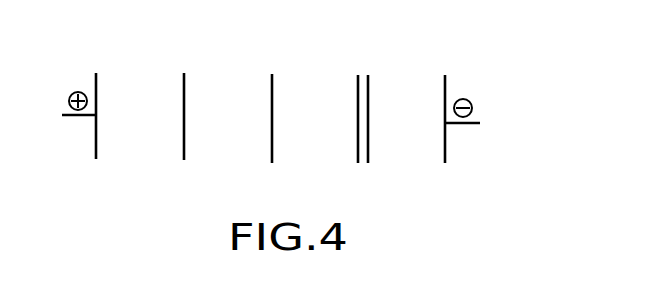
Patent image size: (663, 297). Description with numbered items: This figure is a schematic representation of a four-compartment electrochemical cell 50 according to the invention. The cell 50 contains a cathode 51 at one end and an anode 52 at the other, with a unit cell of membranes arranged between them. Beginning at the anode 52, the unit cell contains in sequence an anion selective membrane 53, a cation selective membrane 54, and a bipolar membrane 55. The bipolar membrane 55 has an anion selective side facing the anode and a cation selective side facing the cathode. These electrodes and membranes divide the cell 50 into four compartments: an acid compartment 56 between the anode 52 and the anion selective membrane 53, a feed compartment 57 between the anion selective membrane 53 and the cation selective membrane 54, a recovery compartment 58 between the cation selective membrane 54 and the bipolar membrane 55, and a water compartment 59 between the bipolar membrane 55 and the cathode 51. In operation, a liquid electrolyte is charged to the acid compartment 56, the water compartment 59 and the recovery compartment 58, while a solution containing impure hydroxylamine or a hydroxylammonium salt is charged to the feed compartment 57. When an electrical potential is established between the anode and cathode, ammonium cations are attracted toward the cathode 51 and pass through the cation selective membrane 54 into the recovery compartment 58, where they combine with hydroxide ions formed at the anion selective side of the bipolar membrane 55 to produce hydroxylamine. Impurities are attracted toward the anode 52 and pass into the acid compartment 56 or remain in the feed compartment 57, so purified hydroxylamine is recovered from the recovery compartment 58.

The electrochemical cell 50 is at (271, 103).
The cathode 51 is at (454, 105).
The anode 52 is at (86, 102).
The anion selective membrane 53 is at (182, 120).
The cation selective membrane 54 is at (271, 121).
The bipolar membrane 55 is at (362, 121).
The acid compartment 56 is at (139, 151).
The feed compartment 57 is at (226, 153).
The recovery compartment 58 is at (314, 153).
The water compartment 59 is at (409, 154).